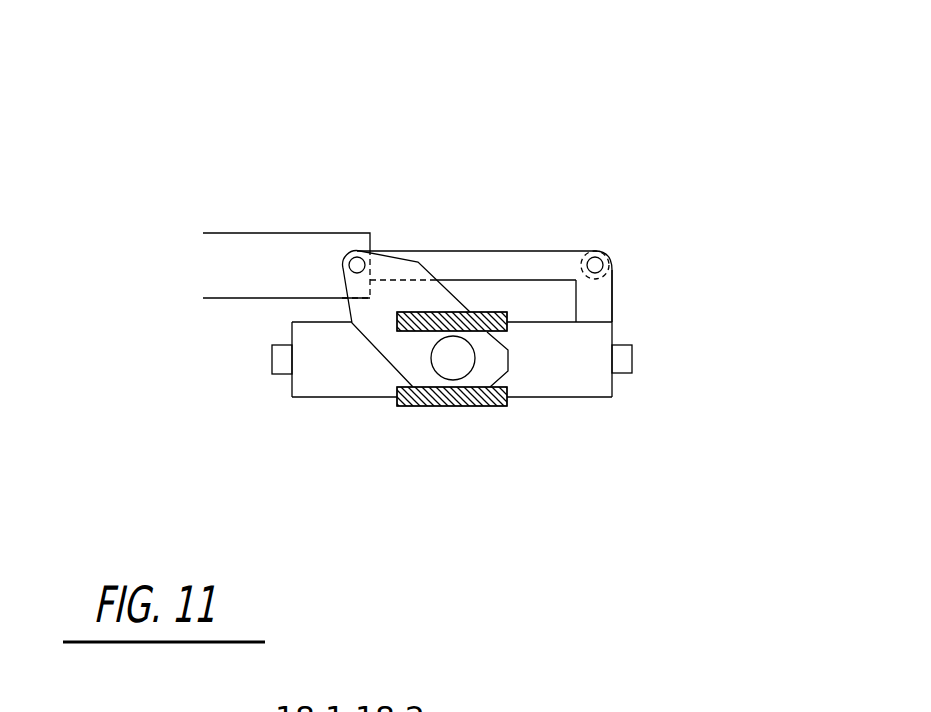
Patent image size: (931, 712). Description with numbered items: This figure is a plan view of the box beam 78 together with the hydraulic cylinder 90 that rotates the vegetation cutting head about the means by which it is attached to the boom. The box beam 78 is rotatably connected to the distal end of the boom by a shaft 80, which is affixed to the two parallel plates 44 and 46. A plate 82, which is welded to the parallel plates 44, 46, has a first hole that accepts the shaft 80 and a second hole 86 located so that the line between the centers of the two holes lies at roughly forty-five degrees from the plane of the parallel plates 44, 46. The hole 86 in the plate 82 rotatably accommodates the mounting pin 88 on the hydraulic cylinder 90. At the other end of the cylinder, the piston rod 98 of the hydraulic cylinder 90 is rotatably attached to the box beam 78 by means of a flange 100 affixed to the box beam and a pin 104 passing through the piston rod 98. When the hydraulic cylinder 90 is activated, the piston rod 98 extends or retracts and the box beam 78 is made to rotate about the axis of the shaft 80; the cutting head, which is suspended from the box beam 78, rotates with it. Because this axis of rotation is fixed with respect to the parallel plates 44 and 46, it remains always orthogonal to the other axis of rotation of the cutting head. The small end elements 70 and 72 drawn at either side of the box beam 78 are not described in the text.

The hydraulic cylinder 90 is at (203, 263).
The second hole 86 is at (354, 258).
The mounting pin 88 is at (364, 256).
The parallel plate 46 is at (437, 312).
The piston rod 98 is at (492, 252).
The pin 104 is at (602, 263).
The flange 100 is at (593, 295).
The left shaft 72 is at (272, 357).
The right shaft 70 is at (632, 360).
The plate 82 is at (379, 351).
The parallel plate 44 is at (463, 407).
The shaft 80 is at (530, 447).
The box beam 78 is at (578, 398).